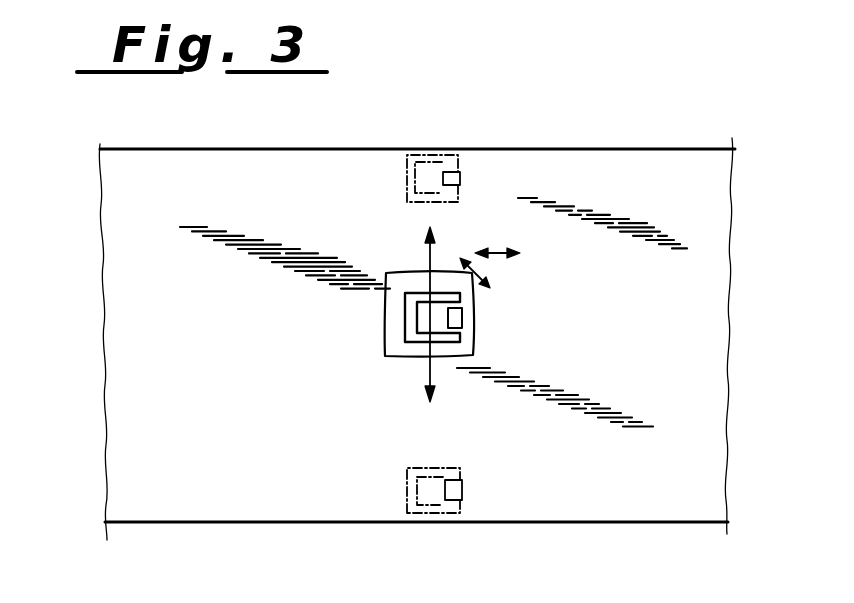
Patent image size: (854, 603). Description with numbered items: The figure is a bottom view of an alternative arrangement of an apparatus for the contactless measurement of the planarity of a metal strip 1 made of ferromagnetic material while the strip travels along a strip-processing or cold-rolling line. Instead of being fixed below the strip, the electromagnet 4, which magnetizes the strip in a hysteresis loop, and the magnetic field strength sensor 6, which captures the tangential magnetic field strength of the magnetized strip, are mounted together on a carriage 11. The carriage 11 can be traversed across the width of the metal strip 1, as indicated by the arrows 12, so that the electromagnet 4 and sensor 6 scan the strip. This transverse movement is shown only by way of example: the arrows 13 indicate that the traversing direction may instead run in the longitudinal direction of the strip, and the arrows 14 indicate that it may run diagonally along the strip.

The metal strip 1 is at (668, 177).
The electromagnet 4 is at (385, 358).
The magnetic field strength sensor 6 is at (458, 320).
The carriage 11 is at (387, 322).
The arrows 12 is at (436, 376).
The arrows 13 is at (497, 250).
The arrows 14 is at (481, 275).